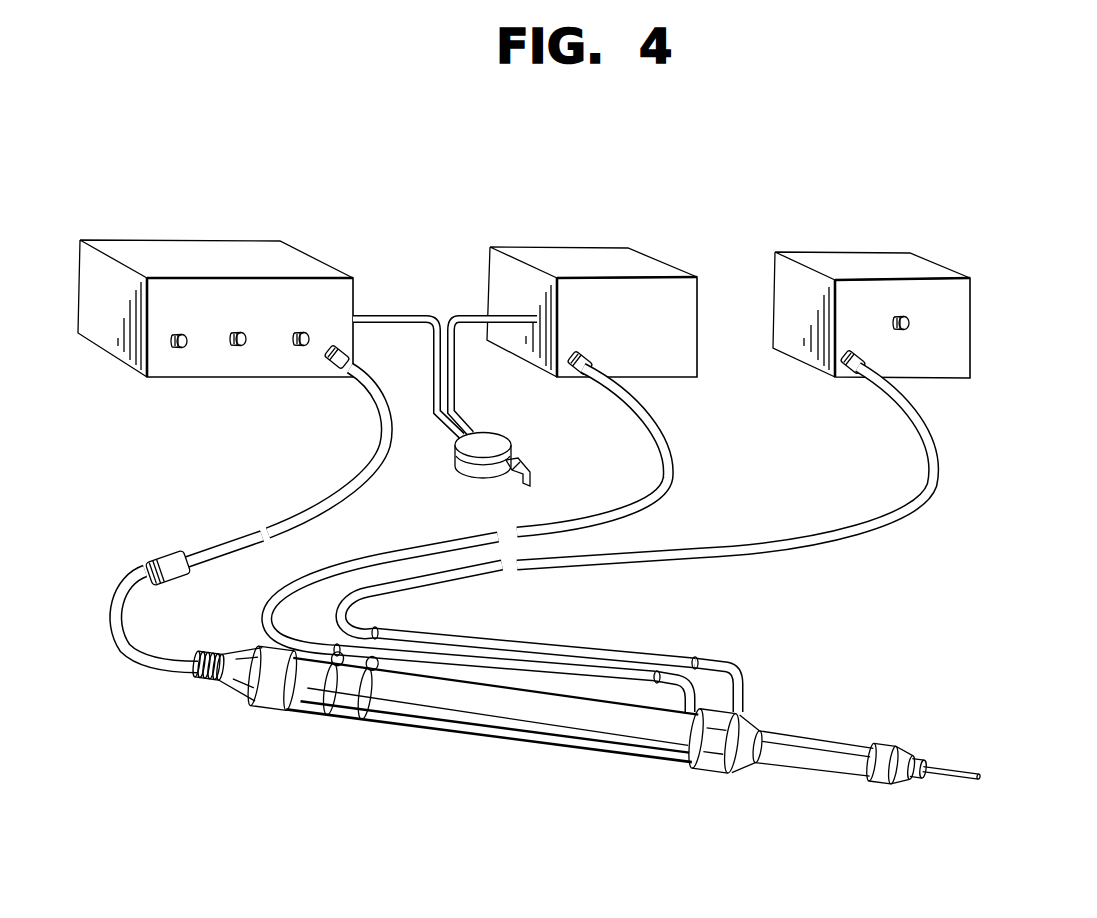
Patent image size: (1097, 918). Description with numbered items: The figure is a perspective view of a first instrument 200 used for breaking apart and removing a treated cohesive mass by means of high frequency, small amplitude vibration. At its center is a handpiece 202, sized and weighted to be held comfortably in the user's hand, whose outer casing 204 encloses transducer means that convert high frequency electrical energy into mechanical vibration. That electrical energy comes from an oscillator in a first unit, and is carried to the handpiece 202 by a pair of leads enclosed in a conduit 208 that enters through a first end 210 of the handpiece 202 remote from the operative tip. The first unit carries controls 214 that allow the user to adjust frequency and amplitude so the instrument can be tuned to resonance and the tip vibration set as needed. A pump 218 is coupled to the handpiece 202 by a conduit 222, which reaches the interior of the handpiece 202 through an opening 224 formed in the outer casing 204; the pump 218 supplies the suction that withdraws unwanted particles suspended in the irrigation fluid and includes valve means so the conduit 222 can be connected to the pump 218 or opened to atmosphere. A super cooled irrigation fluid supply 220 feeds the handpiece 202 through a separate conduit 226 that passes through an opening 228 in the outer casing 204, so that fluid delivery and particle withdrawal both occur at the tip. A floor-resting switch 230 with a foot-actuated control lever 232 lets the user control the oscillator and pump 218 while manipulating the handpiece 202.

The first instrument 200 is at (568, 210).
The handpiece 202 is at (662, 770).
The outer casing 204 is at (505, 722).
The conduit 208 is at (345, 492).
The first end 210 is at (245, 680).
The controls 214 is at (105, 316).
The pump 218 is at (628, 267).
The super cooled irrigation fluid supply 220 is at (928, 272).
The conduit 222 is at (670, 468).
The opening 224 is at (657, 700).
The conduit 226 is at (855, 535).
The opening 228 is at (740, 715).
The switch 230 is at (457, 465).
The control lever 232 is at (533, 470).